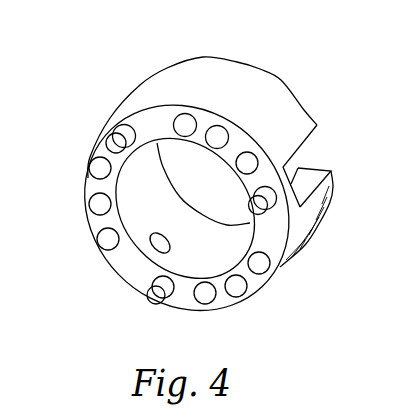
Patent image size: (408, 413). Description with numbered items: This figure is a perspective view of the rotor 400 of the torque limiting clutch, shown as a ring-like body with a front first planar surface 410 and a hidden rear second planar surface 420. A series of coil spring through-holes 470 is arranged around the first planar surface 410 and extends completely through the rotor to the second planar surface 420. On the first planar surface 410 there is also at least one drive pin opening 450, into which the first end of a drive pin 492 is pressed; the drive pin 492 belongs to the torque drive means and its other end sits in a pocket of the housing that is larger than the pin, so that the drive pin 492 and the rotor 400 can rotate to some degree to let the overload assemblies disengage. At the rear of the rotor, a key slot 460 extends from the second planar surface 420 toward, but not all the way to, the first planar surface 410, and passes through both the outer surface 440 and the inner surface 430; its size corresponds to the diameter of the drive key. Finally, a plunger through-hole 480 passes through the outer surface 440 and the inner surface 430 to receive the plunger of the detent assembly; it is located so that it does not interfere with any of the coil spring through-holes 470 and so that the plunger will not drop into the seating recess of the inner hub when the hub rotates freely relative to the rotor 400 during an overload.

The rotor 400 is at (118, 79).
The first planar surface 410 is at (273, 235).
The second planar surface 420 is at (284, 80).
The inner surface 430 is at (143, 193).
The outer surface 440 is at (279, 133).
The drive pin opening 450 is at (173, 287).
The key slot 460 is at (307, 160).
The coil spring through-holes 470 is at (97, 244).
The plunger through-hole 480 is at (150, 245).
The drive pin 492 is at (157, 293).